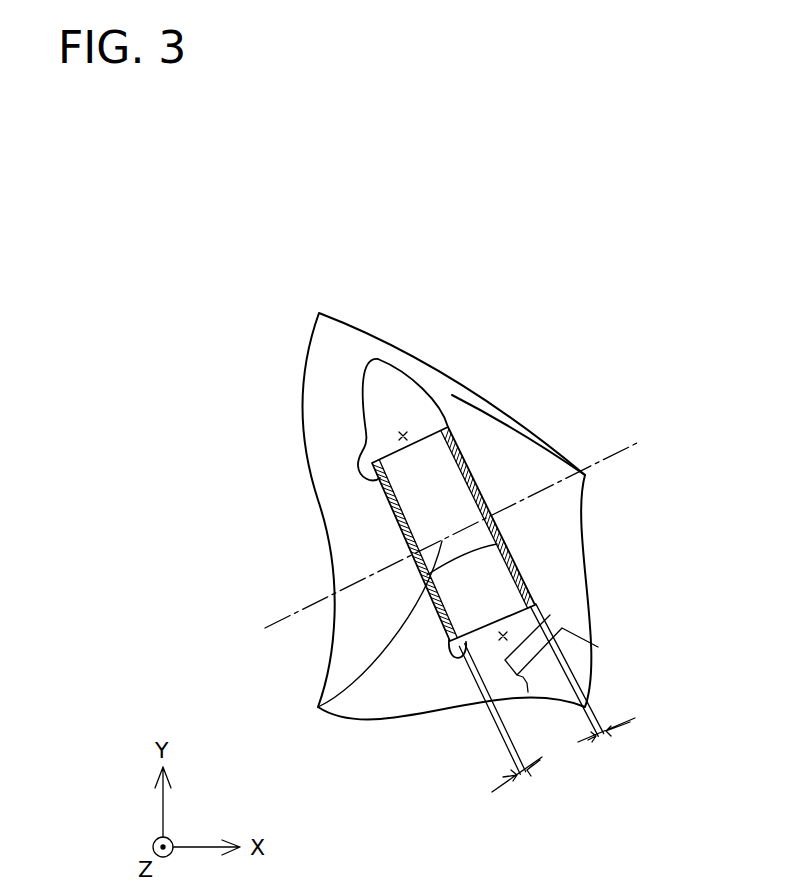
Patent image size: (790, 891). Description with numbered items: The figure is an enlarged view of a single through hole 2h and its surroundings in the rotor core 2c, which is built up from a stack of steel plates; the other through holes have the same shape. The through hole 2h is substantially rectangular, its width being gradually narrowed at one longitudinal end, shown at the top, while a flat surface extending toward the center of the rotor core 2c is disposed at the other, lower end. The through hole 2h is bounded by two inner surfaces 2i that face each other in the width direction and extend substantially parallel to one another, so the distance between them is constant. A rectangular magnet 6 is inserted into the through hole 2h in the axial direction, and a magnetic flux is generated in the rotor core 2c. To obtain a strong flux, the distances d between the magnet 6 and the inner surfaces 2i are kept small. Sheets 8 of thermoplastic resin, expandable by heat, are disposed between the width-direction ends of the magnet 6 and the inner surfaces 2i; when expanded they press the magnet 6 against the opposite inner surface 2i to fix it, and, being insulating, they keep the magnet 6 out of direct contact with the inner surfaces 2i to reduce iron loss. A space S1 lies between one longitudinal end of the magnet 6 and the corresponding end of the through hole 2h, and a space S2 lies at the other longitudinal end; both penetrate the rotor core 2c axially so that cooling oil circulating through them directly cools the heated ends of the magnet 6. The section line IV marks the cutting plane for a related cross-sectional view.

The through hole 2h is at (327, 395).
The rotor core 2c is at (538, 456).
The inner surfaces 2i is at (450, 612).
The magnet 6 is at (423, 527).
The sheets 8 is at (377, 495).
The space S1 is at (403, 436).
The space S2 is at (503, 640).
The distance d is at (563, 764).
The section line IV- IV is at (297, 665).